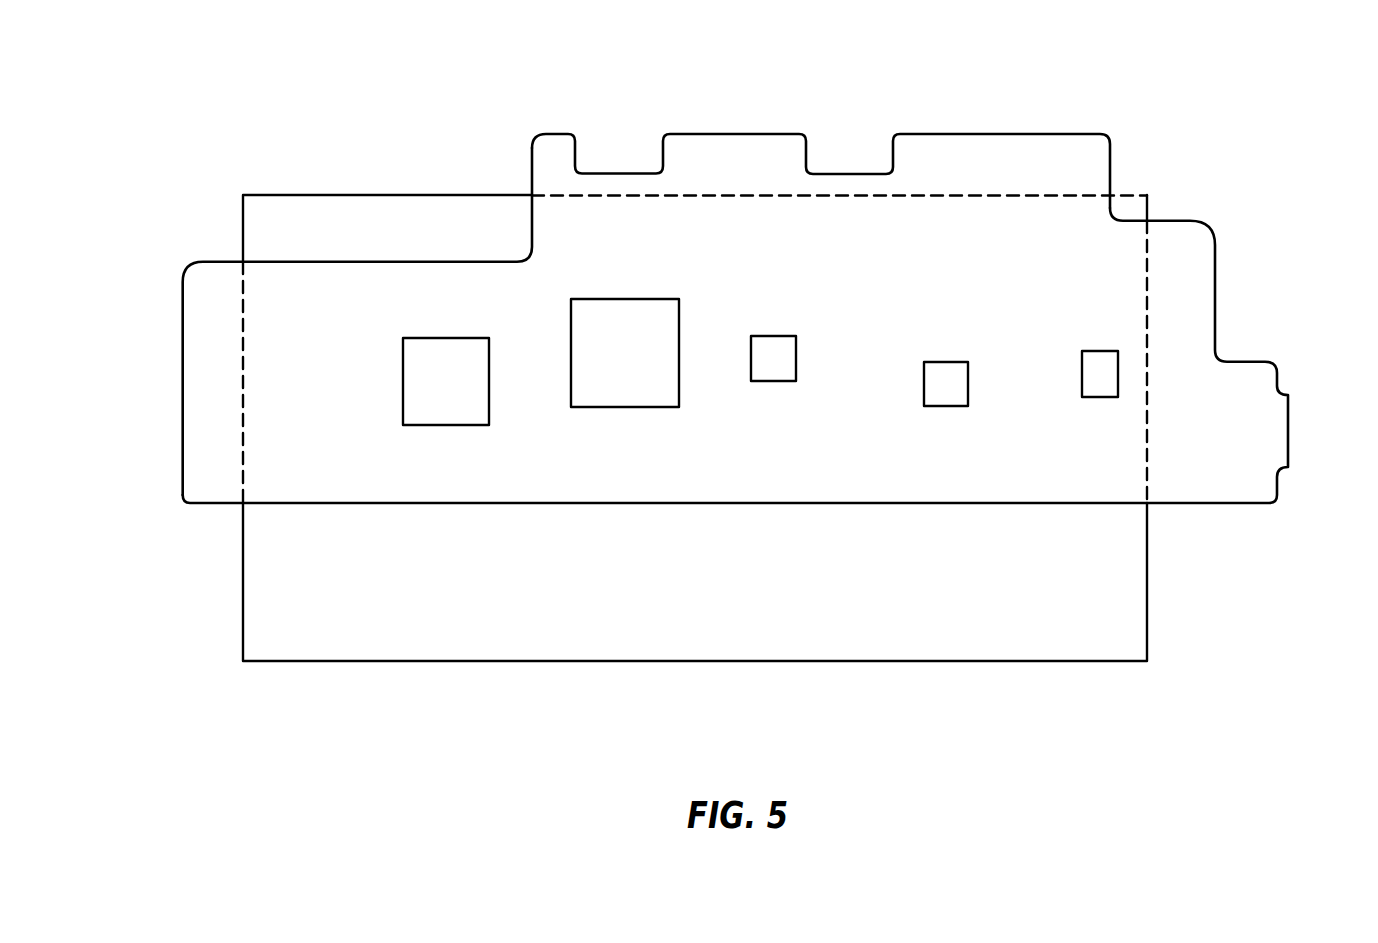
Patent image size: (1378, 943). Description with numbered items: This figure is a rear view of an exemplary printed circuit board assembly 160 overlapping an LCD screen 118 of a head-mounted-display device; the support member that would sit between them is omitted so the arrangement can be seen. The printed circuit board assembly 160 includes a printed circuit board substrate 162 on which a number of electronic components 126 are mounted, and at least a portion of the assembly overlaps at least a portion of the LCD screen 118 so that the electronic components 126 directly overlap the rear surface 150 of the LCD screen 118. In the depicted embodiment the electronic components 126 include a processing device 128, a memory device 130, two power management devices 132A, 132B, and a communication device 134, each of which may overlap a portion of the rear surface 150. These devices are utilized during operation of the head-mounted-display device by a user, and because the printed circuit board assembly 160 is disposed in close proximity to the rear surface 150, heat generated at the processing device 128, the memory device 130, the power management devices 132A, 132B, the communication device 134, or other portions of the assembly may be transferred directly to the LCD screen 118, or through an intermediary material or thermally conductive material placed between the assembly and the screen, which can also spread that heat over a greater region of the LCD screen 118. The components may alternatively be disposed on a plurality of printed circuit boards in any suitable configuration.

The LCD screen 118 is at (362, 193).
The electronic components 126 is at (720, 272).
The processing device 128 is at (631, 407).
The memory device 130 is at (446, 425).
The power management device 132A is at (773, 381).
The power management device 132B is at (946, 406).
The communication device 134 is at (1098, 397).
The rear surface 150 is at (649, 371).
The printed circuit board assembly 160 is at (1029, 133).
The printed circuit board substrate 162 is at (183, 305).